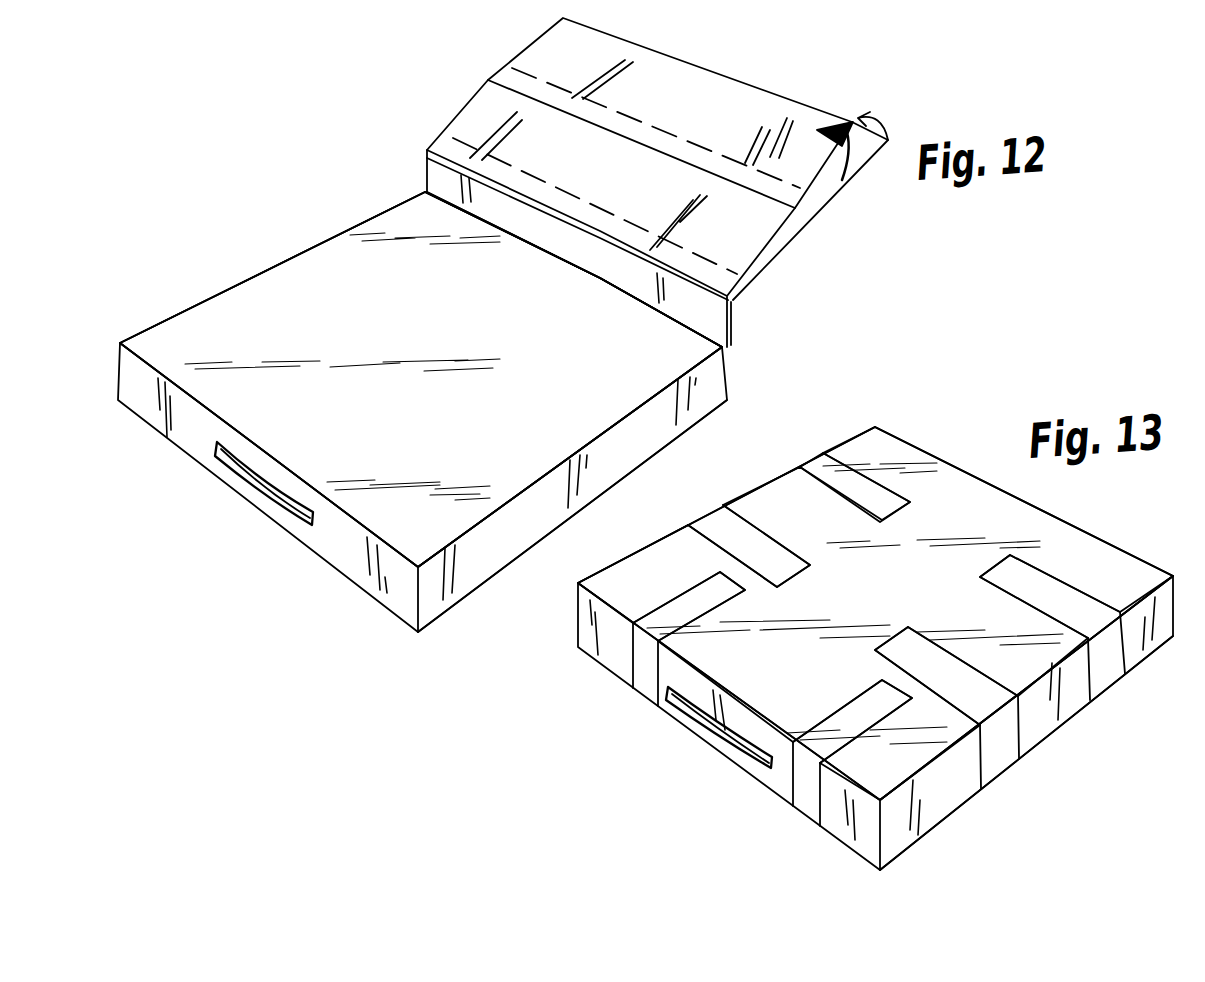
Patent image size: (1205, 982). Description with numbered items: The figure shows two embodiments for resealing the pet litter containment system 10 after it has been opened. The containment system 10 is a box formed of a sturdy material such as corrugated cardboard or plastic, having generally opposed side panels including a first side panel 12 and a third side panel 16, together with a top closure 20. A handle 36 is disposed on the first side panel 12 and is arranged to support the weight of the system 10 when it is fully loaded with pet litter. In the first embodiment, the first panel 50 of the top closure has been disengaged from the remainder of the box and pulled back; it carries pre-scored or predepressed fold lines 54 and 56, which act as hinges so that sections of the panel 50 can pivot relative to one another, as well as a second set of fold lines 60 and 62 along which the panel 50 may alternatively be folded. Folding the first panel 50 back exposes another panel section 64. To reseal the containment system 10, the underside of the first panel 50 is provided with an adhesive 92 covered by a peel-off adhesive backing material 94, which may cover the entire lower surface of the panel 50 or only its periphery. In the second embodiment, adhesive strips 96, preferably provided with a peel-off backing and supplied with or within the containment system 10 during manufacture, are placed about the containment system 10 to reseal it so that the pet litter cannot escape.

In FIG. 12, the pet litter containment system 10 is at (296, 218).
In FIG. 13, the pet litter containment system 10 is at (926, 410).
In FIG. 12, the first side panel 12 is at (373, 567).
In FIG. 13, the first side panel 12 is at (775, 778).
In FIG. 12, the third side panel 16 is at (475, 563).
In FIG. 13, the third side panel 16 is at (922, 807).
In FIG. 13, the top closure 20 is at (896, 587).
In FIG. 12, the handle 36 is at (265, 498).
In FIG. 13, the handle 36 is at (707, 728).
In FIG. 12, the first panel 50 is at (637, 196).
In FIG. 12, the fold line 54 is at (640, 303).
In FIG. 12, the fold line 56 is at (424, 163).
In FIG. 12, the fold line 60 is at (715, 268).
In FIG. 12, the fold line 62 is at (693, 143).
In FIG. 12, the panel section 64 is at (450, 340).
In FIG. 12, the adhesive 92 is at (868, 150).
In FIG. 12, the peel-off adhesive backing material 94 is at (823, 146).
In FIG. 13, the adhesive strips 96 is at (863, 495).